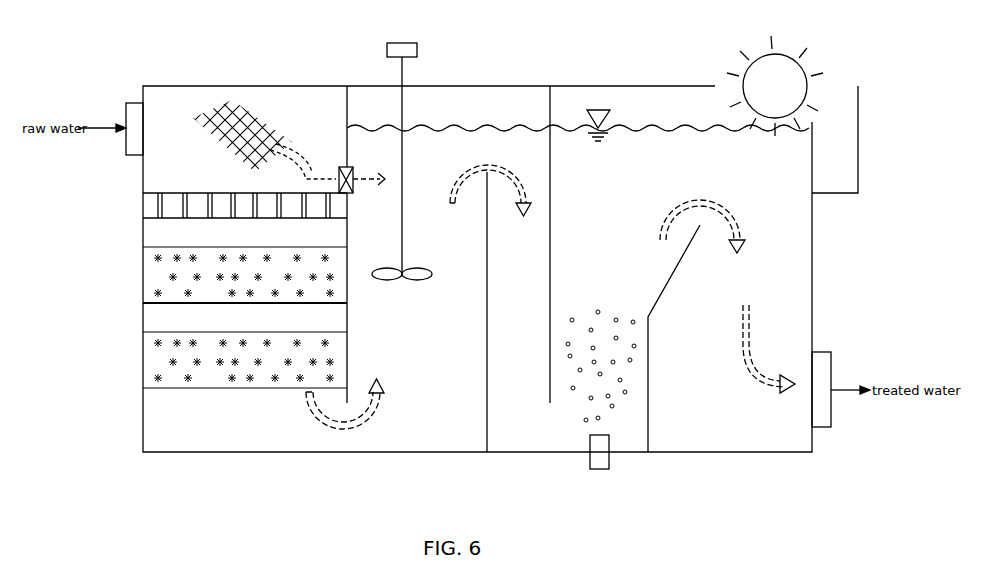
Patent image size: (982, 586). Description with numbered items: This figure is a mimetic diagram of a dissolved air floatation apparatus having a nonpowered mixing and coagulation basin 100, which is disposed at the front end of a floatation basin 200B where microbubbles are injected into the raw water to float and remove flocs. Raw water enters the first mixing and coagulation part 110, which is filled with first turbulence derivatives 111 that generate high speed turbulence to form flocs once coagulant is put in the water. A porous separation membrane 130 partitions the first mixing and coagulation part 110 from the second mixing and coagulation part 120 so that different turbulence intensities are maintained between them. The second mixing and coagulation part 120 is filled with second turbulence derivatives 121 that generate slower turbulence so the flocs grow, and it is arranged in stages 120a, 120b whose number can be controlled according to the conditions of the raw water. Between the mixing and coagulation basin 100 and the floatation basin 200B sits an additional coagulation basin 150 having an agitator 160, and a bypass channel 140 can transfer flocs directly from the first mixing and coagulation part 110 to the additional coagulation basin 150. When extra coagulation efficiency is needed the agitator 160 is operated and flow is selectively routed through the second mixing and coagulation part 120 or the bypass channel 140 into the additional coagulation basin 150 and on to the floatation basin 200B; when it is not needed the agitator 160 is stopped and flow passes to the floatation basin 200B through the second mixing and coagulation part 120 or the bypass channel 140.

The nonpowered mixing and coagulation basin 100 is at (143, 470).
The first mixing and coagulation part 110 is at (298, 110).
The first turbulence derivatives 111 is at (244, 104).
The second mixing and coagulation part 120 is at (198, 312).
The stage of the second mixing and coagulation part 120a is at (148, 272).
The stage of the second mixing and coagulation part 120b is at (215, 360).
The second turbulence derivatives 121 is at (148, 257).
The porous separation membrane 130 is at (145, 207).
The bypass channel 140 is at (343, 167).
The additional coagulation basin 150 is at (450, 135).
The agitator 160 is at (410, 43).
The floatation basin 200B is at (487, 470).